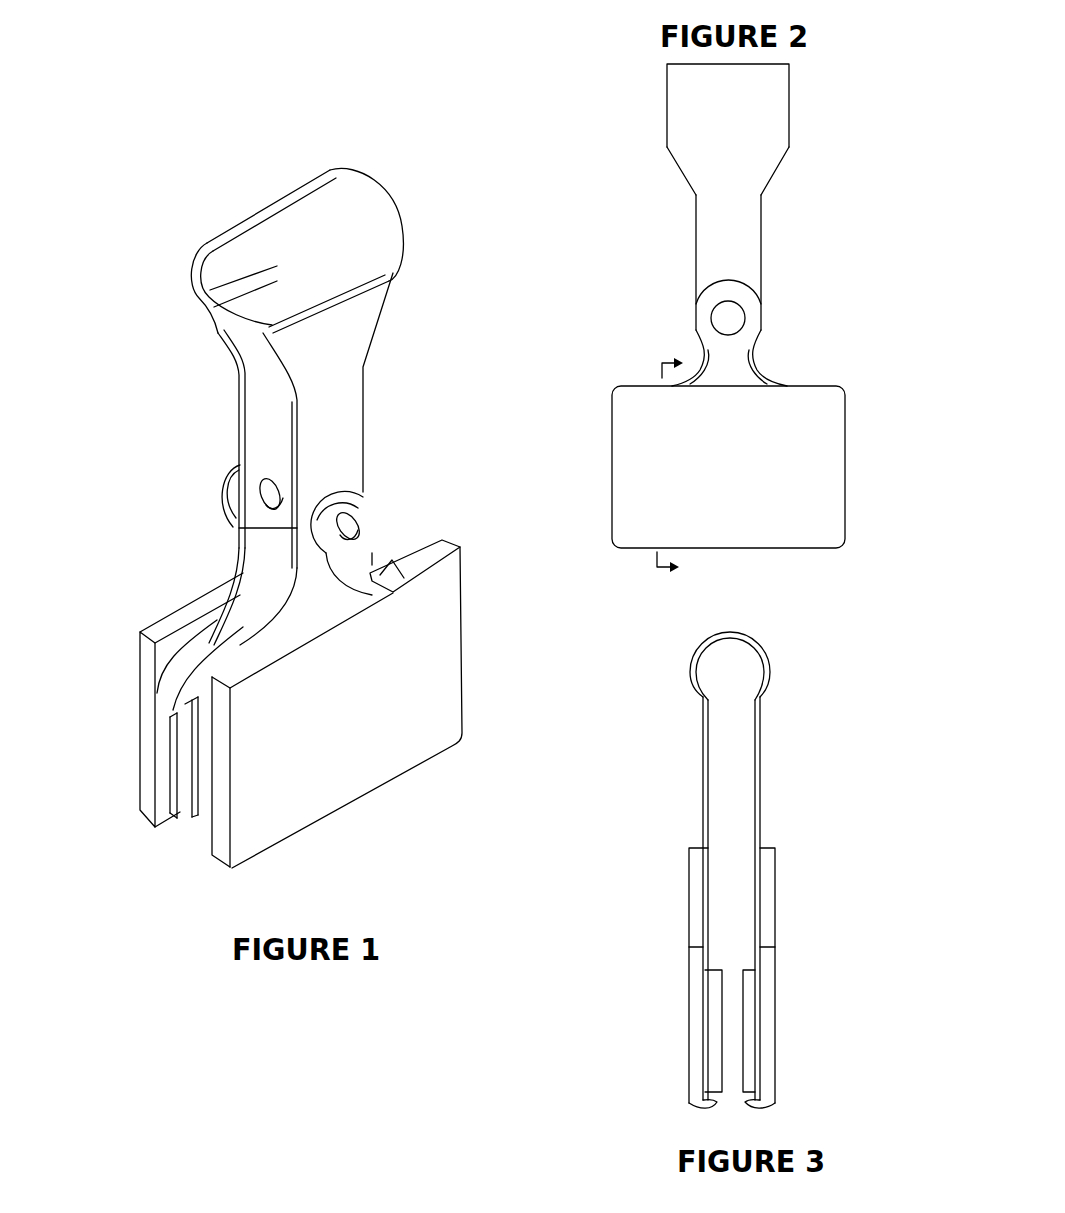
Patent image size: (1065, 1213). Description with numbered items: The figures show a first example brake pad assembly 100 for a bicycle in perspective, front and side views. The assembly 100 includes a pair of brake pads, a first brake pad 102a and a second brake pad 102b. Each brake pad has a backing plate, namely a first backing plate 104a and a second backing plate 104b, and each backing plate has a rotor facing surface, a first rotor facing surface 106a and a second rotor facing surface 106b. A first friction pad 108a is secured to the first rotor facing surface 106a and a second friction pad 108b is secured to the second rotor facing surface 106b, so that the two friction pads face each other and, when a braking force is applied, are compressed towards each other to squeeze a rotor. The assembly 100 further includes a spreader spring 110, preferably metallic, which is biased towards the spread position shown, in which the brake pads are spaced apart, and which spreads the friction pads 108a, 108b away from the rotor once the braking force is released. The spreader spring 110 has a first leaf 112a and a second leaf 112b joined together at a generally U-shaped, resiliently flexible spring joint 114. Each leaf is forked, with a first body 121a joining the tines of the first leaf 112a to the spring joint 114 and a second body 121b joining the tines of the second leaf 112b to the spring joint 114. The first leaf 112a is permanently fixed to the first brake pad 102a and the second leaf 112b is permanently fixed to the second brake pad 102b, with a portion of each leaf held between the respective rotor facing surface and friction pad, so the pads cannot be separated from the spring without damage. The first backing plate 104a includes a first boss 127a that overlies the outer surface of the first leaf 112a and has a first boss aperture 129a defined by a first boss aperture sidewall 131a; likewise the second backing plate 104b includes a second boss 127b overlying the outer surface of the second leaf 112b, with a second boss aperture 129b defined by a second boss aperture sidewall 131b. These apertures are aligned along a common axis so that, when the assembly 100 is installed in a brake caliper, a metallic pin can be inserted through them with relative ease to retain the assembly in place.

In FIG. 1, the brake pad assembly 100 is at (196, 232).
In FIG. 2, the brake pad assembly 100 is at (602, 241).
In FIG. 3, the brake pad assembly 100 is at (628, 885).
In FIG. 1, the first brake pad 102a is at (374, 758).
In FIG. 2, the first brake pad 102a is at (798, 510).
In FIG. 3, the first brake pad 102a is at (786, 1062).
In FIG. 1, the second brake pad 102b is at (128, 648).
In FIG. 3, the second brake pad 102b is at (684, 1021).
In FIG. 1, the first backing plate 104a is at (425, 702).
In FIG. 2, the first backing plate 104a is at (803, 455).
In FIG. 3, the first backing plate 104a is at (773, 1027).
In FIG. 1, the second backing plate 104b is at (150, 663).
In FIG. 3, the second backing plate 104b is at (693, 1043).
In FIG. 3, the first rotor facing surface 106a is at (745, 1102).
In FIG. 1, the second rotor facing surface 106b is at (186, 642).
In FIG. 3, the second rotor facing surface 106b is at (717, 1102).
In FIG. 1, the first friction pad 108a is at (210, 805).
In FIG. 3, the first friction pad 108a is at (755, 1005).
In FIG. 1, the second friction pad 108b is at (177, 748).
In FIG. 3, the second friction pad 108b is at (713, 1053).
In FIG. 1, the spreader spring 110 is at (357, 343).
In FIG. 2, the spreader spring 110 is at (747, 223).
In FIG. 3, the spreader spring 110 is at (760, 760).
In FIG. 1, the first leaf 112a is at (347, 437).
In FIG. 2, the first leaf 112a is at (733, 258).
In FIG. 3, the first leaf 112a is at (763, 812).
In FIG. 1, the second leaf 112b is at (262, 440).
In FIG. 3, the second leaf 112b is at (705, 812).
In FIG. 1, the spring joint 114 is at (315, 190).
In FIG. 2, the spring joint 114 is at (770, 90).
In FIG. 3, the spring joint 114 is at (770, 660).
In FIG. 1, the first body 121a is at (340, 467).
In FIG. 2, the first body 121a is at (733, 188).
In FIG. 3, the first body 121a is at (763, 837).
In FIG. 1, the second body 121b is at (250, 393).
In FIG. 3, the second body 121b is at (705, 738).
In FIG. 1, the first boss 127a is at (367, 537).
In FIG. 2, the first boss 127a is at (729, 333).
In FIG. 1, the second boss 127b is at (235, 503).
In FIG. 1, the first boss aperture 129a is at (350, 527).
In FIG. 2, the first boss aperture 129a is at (728, 318).
In FIG. 1, the second boss aperture 129b is at (258, 492).
In FIG. 1, the first boss aperture sidewall 131a is at (377, 593).
In FIG. 1, the second boss aperture sidewall 131b is at (265, 528).